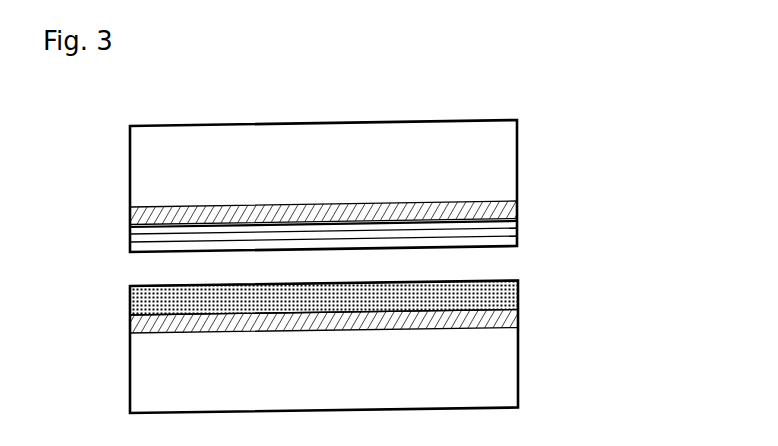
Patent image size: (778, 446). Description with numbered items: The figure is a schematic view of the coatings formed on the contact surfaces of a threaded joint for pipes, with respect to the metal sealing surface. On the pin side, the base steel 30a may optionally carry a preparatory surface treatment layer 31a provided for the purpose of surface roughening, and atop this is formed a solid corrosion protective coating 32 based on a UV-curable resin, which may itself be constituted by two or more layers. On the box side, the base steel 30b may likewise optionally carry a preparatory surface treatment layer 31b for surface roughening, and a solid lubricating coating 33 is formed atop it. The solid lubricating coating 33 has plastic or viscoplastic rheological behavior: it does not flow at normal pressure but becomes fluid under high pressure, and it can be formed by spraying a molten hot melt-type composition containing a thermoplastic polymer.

The base steel 30a is at (518, 368).
The base steel 30b is at (517, 161).
The preparatory surface treatment layer 31a is at (518, 320).
The preparatory surface treatment layer 31b is at (517, 209).
The solid corrosion protective coating 32 is at (517, 233).
The solid lubricating coating 33 is at (518, 295).